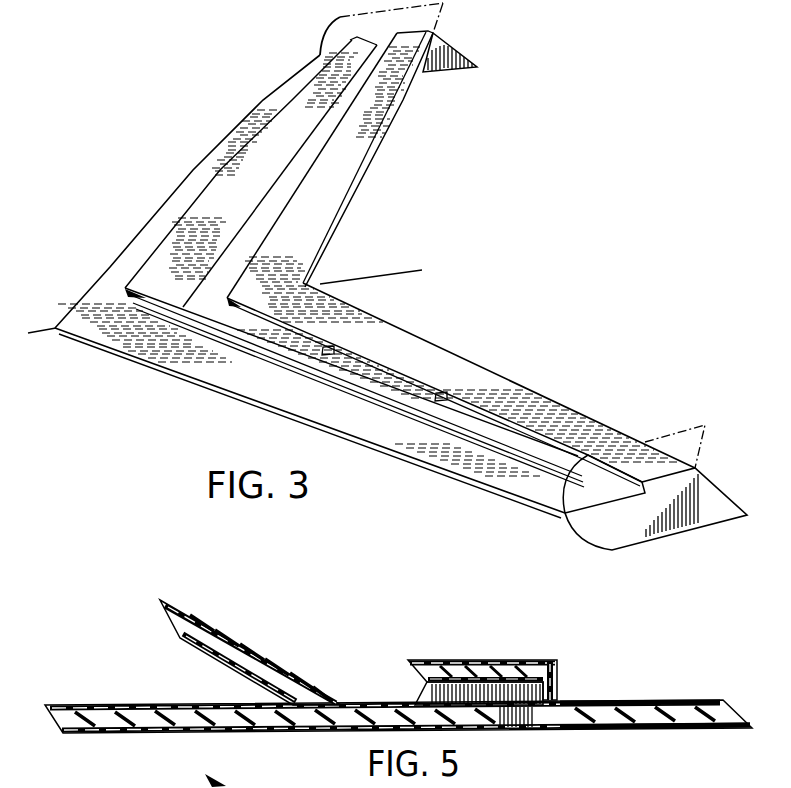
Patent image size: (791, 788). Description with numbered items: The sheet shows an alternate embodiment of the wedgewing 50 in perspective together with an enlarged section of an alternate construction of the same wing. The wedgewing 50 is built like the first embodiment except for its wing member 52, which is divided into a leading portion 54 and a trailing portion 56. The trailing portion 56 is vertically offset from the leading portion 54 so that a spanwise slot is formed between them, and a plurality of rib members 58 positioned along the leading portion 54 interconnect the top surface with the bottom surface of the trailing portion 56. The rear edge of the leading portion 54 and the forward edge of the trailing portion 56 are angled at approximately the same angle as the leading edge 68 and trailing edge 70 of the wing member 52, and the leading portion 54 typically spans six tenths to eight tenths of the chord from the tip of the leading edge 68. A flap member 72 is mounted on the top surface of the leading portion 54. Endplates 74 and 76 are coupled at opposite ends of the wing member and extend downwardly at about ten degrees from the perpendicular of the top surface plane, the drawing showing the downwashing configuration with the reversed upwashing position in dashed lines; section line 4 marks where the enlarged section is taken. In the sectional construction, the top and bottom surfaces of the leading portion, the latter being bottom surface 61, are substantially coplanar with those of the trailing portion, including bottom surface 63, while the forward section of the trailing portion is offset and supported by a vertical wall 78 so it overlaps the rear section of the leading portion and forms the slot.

In FIG. 3, the wedgewing 50 is at (221, 139).
In FIG. 3, the wing member 52 is at (426, 473).
In FIG. 3, the leading portion 54 is at (216, 368).
In FIG. 5, the leading portion 54 is at (398, 709).
In FIG. 3, the trailing portion 56 is at (517, 381).
In FIG. 5, the trailing portion 56 is at (655, 701).
In FIG. 3, the rib members 58 is at (438, 398).
In FIG. 5, the rib members 58 is at (444, 722).
In FIG. 3, the leading edge 68 is at (490, 487).
In FIG. 3, the trailing edge 70 is at (366, 167).
In FIG. 3, the flap member 72 is at (175, 250).
In FIG. 5, the flap member 72 is at (233, 647).
In FIG. 3, the endplate 74 is at (588, 522).
In FIG. 3, the endplate 76 is at (455, 68).
In FIG. 3, the section line 4- 4 is at (428, 281).
In FIG. 5, the bottom surface 61 is at (167, 733).
In FIG. 5, the bottom surface 63 is at (627, 698).
In FIG. 5, the vertical wall 78 is at (560, 683).